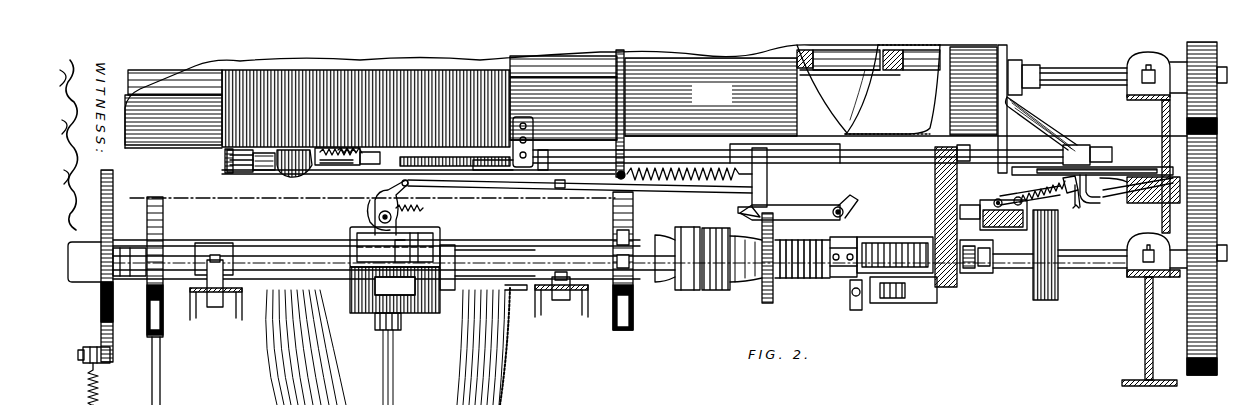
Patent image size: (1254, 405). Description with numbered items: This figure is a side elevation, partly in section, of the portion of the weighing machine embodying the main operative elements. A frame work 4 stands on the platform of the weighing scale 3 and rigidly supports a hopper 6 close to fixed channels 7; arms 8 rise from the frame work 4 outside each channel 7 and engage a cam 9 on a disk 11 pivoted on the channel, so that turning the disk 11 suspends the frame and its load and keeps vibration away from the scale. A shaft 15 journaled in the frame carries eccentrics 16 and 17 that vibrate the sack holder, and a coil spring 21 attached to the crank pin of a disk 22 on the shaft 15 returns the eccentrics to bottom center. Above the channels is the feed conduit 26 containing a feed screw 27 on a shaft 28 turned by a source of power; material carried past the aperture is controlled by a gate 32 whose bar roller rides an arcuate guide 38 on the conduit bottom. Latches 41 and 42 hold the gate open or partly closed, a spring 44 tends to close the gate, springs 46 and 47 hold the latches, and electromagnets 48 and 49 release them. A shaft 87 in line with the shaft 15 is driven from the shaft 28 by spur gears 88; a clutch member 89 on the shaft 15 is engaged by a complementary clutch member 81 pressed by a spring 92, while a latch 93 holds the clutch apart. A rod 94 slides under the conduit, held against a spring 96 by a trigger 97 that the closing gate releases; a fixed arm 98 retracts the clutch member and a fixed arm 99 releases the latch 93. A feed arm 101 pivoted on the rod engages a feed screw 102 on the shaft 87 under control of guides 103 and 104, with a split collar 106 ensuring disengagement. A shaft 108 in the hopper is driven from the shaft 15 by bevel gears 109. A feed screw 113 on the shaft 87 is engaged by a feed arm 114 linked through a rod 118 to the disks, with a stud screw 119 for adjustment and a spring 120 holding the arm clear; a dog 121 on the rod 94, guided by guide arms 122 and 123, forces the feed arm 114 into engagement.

The weighing scale 3 is at (300, 198).
The frame work 4 is at (731, 163).
The hopper 6 is at (497, 379).
The channels 7 is at (272, 241).
The arms 8 is at (378, 201).
The cam 9 is at (415, 215).
The disk 11 is at (378, 218).
The shaft 15 is at (498, 262).
The eccentric 16 is at (165, 213).
The eccentric 17 is at (613, 213).
The coil spring 21 is at (100, 399).
The disk 22 is at (111, 349).
The feed conduit 26 is at (727, 102).
The feed screw 27 is at (925, 118).
The shaft 28 is at (1071, 62).
The gate 32 is at (340, 165).
The arcuate guide 38 is at (453, 158).
The latch 41 is at (371, 166).
The latch 42 is at (402, 168).
The spring 44 is at (340, 152).
The spring 46 is at (238, 152).
The spring 47 is at (276, 155).
The electromagnet 48 is at (256, 172).
The electromagnet 49 is at (292, 178).
The clutch member 81 is at (727, 292).
The shaft 87 is at (1088, 270).
The spur gears 88 is at (1215, 121).
The clutch member 89 is at (683, 292).
The spring 92 is at (785, 288).
The latch 93 is at (822, 212).
The rod 94 is at (834, 170).
The spring 96 is at (670, 182).
The trigger 97 is at (543, 172).
The fixed arm 98 is at (767, 186).
The fixed arm 99 is at (862, 216).
The feed arm 101 is at (948, 272).
The feed screw 102 is at (898, 237).
The guide 103 is at (866, 300).
The guide 104 is at (918, 303).
The split collar 106 is at (987, 274).
The shaft 108 is at (395, 379).
The bevel gears 109 is at (443, 305).
The feed screw 113 is at (1043, 288).
The feed arm 114 is at (1073, 192).
The rod 118 is at (560, 190).
The stud screw 119 is at (970, 207).
The spring 120 is at (1019, 198).
The dog 121 is at (1082, 145).
The guide arm 122 is at (1106, 190).
The guide arm 123 is at (1122, 167).